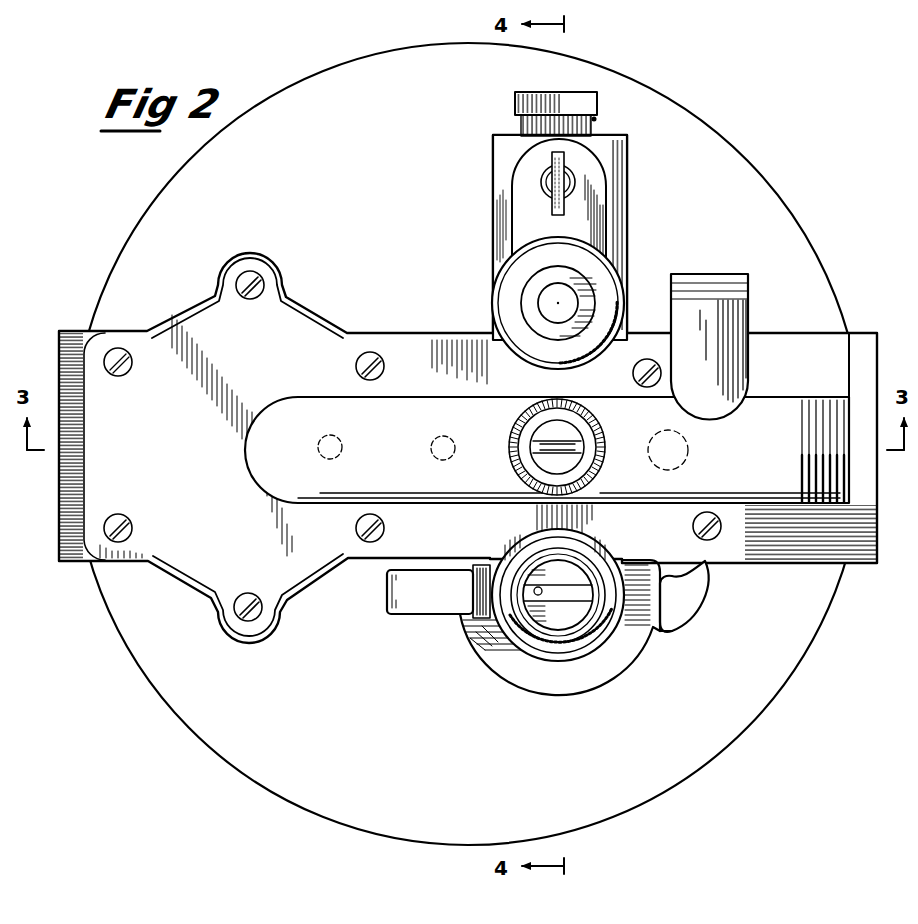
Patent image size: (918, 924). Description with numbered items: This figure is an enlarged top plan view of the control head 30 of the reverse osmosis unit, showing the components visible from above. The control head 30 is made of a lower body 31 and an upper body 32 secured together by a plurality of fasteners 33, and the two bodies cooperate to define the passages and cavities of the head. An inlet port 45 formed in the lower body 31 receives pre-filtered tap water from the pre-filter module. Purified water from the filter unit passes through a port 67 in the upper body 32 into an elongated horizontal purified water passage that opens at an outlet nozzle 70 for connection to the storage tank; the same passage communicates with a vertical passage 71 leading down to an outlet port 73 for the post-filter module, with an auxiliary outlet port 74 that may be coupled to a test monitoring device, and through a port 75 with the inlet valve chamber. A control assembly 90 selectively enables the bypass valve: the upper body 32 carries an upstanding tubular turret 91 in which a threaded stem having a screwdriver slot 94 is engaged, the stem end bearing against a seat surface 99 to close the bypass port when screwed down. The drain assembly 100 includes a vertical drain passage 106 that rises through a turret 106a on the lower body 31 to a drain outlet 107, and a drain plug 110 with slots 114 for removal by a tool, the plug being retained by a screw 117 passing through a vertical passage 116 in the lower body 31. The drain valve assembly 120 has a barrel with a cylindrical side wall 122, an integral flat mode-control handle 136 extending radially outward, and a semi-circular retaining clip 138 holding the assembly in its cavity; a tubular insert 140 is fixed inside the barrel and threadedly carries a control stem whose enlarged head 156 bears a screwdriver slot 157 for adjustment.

The control head 30 is at (770, 126).
The lower body 31 is at (345, 76).
The upper body 32 is at (345, 318).
The fasteners 33 is at (238, 284).
The inlet port 45 is at (59, 356).
The port 67 is at (440, 442).
The outlet nozzle 70 is at (856, 400).
The vertical passage 71 is at (688, 452).
The outlet port 73 is at (875, 564).
The auxiliary outlet port 74 is at (714, 274).
The port 75 is at (326, 440).
The control assembly 90 is at (521, 503).
The tubular turret 91 is at (520, 430).
The screwdriver slot 94 is at (531, 455).
The seat surface 99 is at (602, 432).
The drain assembly 100 is at (625, 676).
The vertical drain passage 106 is at (547, 310).
The turret 106a is at (494, 306).
The drain outlet 107 is at (590, 312).
The drain plug 110 is at (580, 92).
The slots 114 is at (596, 119).
The vertical passage 116 is at (577, 180).
The screw 117 is at (545, 180).
The drain valve assembly 120 is at (505, 658).
The side wall 122 is at (566, 645).
The mode-control handle 136 is at (395, 614).
The retaining clip 138 is at (470, 648).
The insert 140 is at (580, 618).
The head 156 is at (545, 612).
The screwdriver slot 157 is at (527, 578).